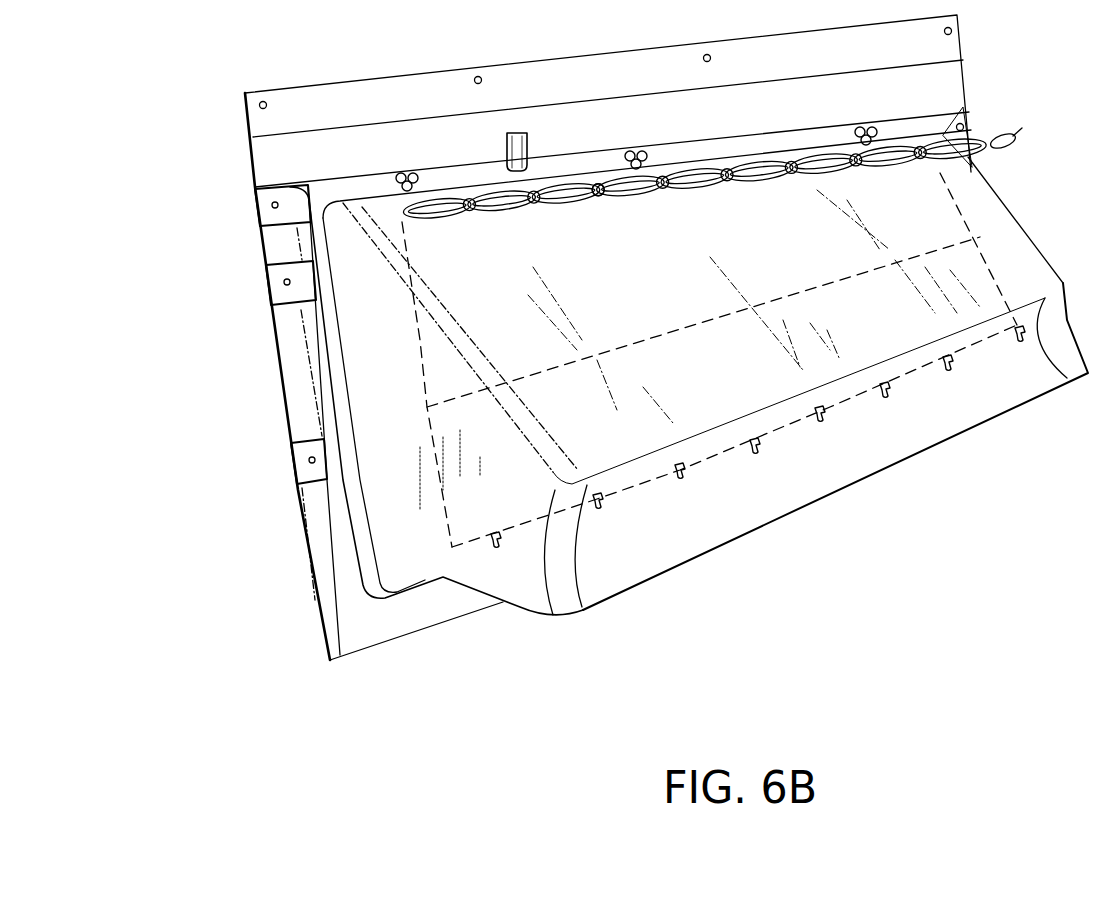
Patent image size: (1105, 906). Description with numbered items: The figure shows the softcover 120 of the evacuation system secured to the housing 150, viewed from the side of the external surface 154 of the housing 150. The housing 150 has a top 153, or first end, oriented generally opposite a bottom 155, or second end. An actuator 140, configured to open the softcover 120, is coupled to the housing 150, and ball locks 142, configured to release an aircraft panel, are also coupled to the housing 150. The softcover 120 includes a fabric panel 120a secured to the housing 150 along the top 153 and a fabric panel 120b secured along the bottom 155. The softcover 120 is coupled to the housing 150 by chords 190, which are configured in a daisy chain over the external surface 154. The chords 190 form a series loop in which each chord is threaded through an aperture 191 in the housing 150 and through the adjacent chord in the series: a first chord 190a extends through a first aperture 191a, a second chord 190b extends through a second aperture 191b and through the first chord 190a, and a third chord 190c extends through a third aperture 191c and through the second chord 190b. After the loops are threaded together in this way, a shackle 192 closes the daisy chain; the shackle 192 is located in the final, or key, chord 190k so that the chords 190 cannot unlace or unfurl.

The softcover 120 is at (427, 410).
The fabric panel 120a is at (432, 316).
The fabric panel 120b is at (512, 527).
The actuator 140 is at (530, 148).
The ball locks 142 is at (850, 135).
The housing 150 is at (1015, 273).
The top 153 is at (960, 125).
The external surface 154 is at (756, 250).
The bottom 155 is at (443, 577).
The chords 190 is at (783, 183).
The first chord 190a is at (475, 216).
The second chord 190b is at (553, 208).
The third chord 190c is at (646, 195).
The key chord 190k is at (998, 157).
The aperture 191 is at (937, 160).
The first aperture 191a is at (413, 218).
The second aperture 191b is at (490, 203).
The third aperture 191c is at (584, 195).
The shackle 192 is at (1012, 140).